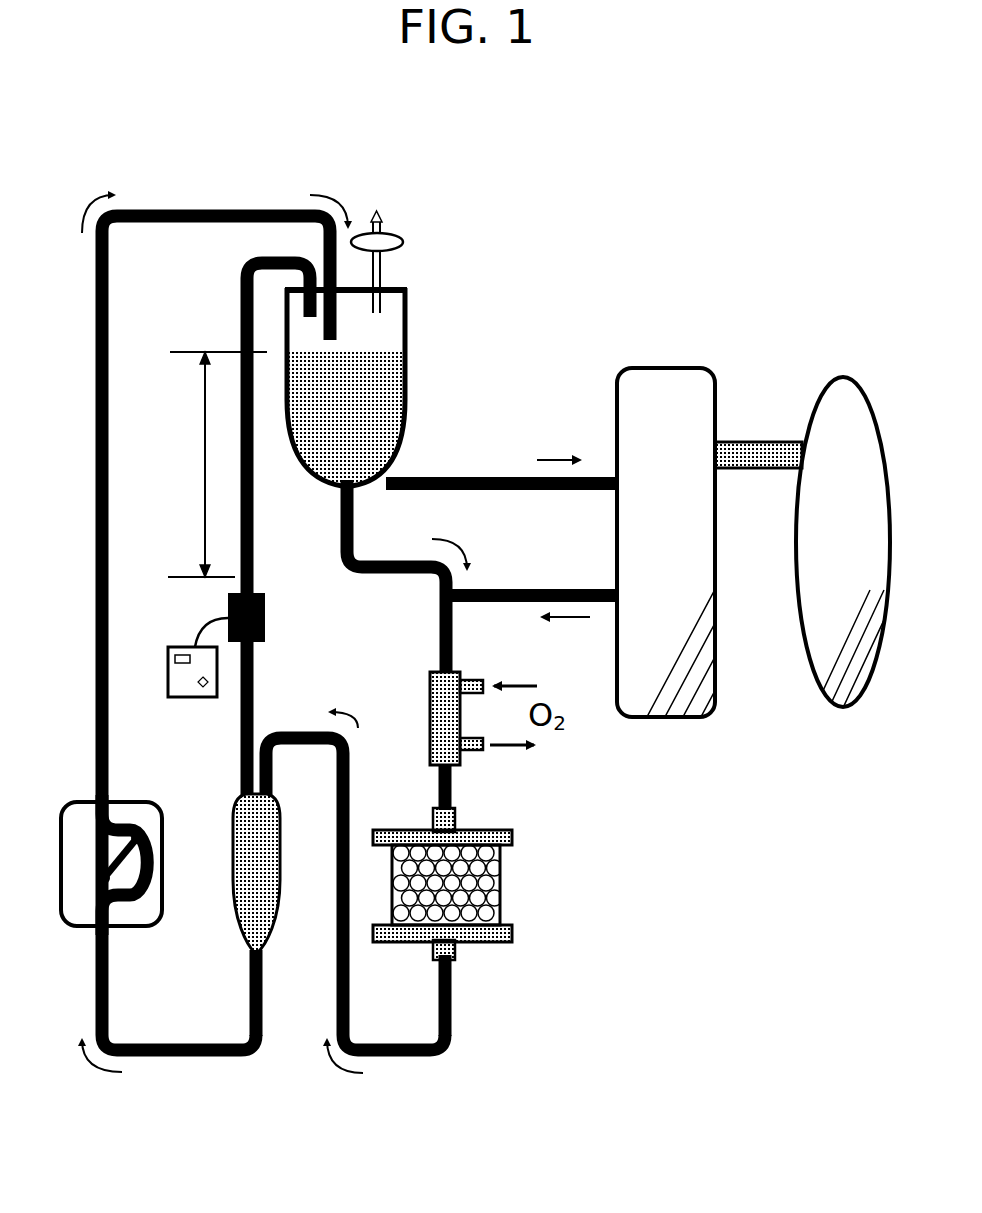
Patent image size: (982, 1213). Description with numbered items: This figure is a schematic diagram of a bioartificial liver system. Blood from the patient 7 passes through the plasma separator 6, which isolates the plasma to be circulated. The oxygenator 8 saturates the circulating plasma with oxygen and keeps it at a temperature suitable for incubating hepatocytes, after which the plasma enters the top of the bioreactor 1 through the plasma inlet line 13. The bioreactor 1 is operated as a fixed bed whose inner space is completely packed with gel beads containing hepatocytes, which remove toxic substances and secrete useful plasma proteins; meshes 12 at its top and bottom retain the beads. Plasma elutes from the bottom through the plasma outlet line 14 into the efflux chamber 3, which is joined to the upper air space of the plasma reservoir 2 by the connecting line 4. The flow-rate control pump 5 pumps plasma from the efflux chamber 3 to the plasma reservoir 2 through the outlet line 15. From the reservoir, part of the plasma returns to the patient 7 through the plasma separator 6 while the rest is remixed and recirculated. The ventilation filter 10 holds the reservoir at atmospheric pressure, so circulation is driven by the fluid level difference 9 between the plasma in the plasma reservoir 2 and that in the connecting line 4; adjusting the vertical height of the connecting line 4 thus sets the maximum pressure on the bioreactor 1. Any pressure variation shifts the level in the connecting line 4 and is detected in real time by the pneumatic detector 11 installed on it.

The bioreactor 1 is at (497, 896).
The plasma reservoir 2 is at (373, 387).
The efflux chamber 3 is at (269, 873).
The connecting line 4 is at (269, 529).
The flow-rate control pump 5 is at (97, 865).
The plasma separator 6 is at (695, 549).
The patient 7 is at (854, 558).
The oxygenator 8 is at (442, 718).
The fluid level difference 9 is at (217, 464).
The ventilation filter 10 is at (395, 262).
The pneumatic detector 11 is at (198, 680).
The meshes 12 is at (464, 886).
The plasma inlet line 13 is at (468, 798).
The plasma outlet line 14 is at (469, 995).
The plasma outlet line 15 is at (276, 993).